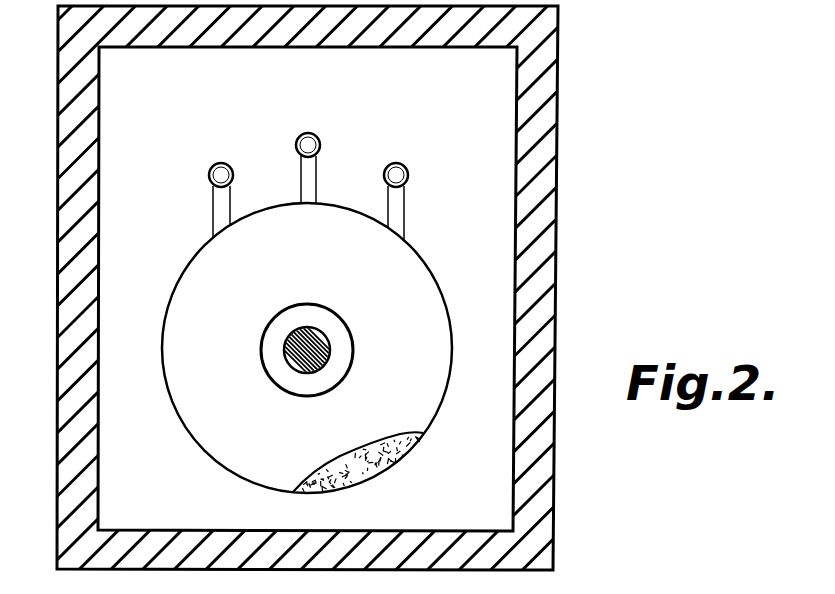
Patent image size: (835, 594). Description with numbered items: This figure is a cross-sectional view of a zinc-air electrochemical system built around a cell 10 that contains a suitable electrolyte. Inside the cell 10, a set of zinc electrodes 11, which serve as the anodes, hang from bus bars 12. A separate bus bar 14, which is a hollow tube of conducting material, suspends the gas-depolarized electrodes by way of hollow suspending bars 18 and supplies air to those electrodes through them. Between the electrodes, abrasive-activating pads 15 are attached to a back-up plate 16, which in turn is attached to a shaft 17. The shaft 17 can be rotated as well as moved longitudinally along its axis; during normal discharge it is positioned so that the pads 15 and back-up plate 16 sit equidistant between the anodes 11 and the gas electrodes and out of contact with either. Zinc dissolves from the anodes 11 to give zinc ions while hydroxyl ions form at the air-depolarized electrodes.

The cell 10 is at (62, 339).
The zinc electrode 11 is at (222, 459).
The bus bar 12 is at (208, 179).
The bus bar 14 is at (317, 137).
The abrasive-activating pad 15 is at (410, 450).
The back-up plate 16 is at (345, 345).
The shaft 17 is at (318, 332).
The hollow suspending bar 18 is at (304, 166).